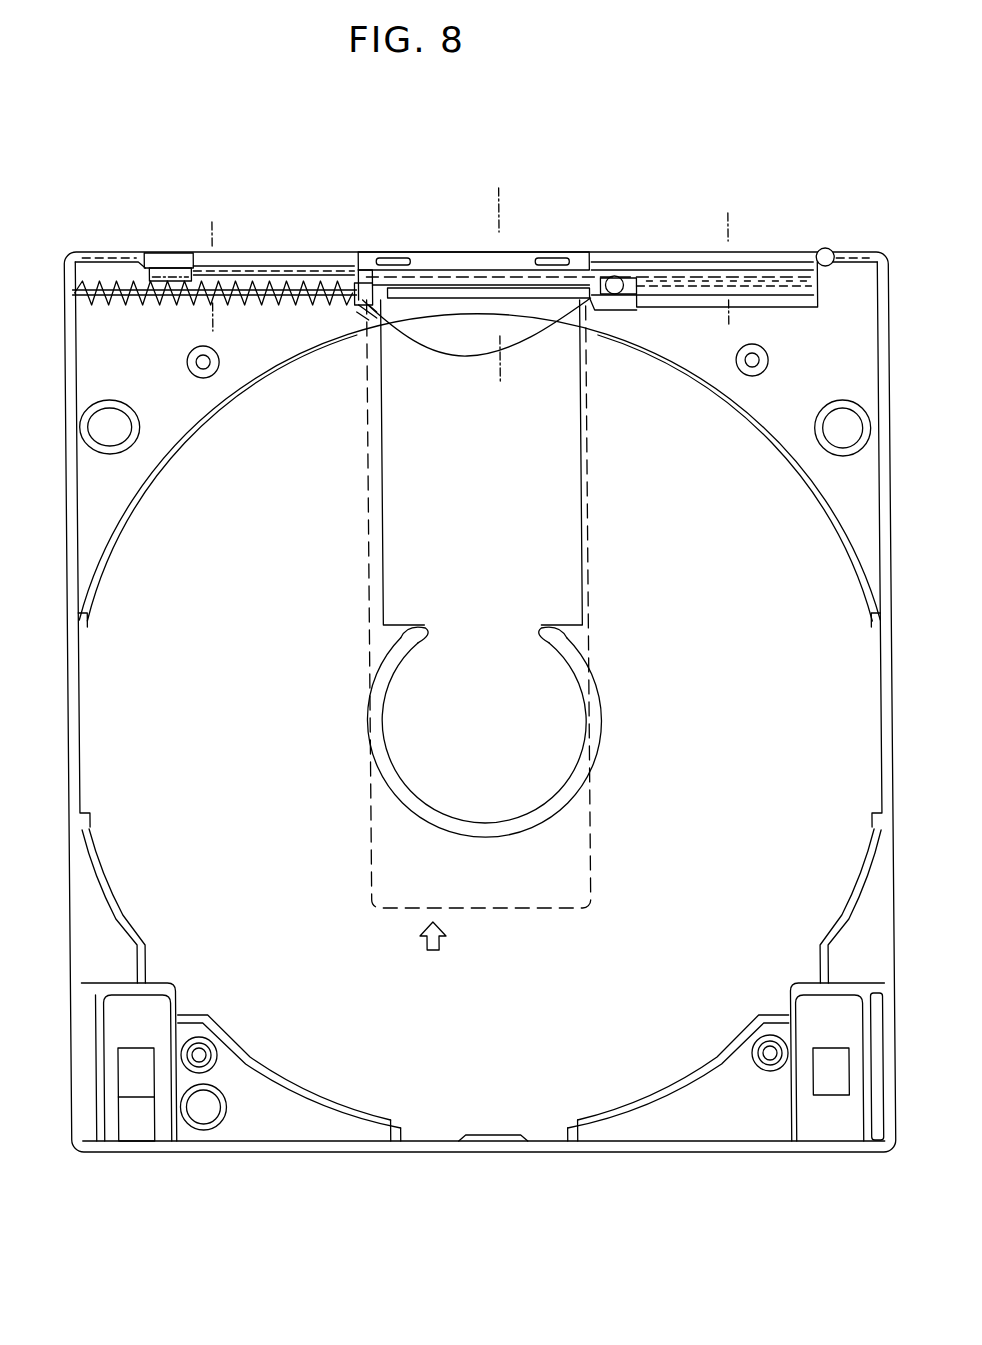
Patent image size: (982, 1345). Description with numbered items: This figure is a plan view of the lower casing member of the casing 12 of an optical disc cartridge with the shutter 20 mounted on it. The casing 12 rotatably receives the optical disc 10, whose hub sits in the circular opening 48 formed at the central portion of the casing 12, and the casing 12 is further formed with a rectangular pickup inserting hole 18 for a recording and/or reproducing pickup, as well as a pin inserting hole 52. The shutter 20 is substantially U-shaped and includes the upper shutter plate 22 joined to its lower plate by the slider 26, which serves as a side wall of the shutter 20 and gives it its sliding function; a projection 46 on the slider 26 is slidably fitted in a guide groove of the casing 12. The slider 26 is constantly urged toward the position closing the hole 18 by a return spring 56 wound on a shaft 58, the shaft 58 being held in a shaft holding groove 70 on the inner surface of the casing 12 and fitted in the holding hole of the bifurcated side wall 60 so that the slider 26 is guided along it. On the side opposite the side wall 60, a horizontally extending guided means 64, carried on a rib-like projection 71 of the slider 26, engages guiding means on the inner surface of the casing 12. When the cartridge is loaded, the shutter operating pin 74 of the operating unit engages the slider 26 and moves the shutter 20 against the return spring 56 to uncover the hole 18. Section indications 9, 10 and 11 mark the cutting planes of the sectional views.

The section line 9- 9 is at (197, 331).
The optical disc 10 is at (712, 326).
The section line 11- 11 is at (483, 380).
The casing 12 is at (70, 551).
The pickup inserting hole 18 is at (584, 492).
The shutter 20 is at (479, 641).
The upper shutter plate 22 is at (541, 330).
The slider 26 is at (175, 253).
The projection for engagement 46 is at (478, 285).
The circular opening 48 is at (582, 772).
The pin inserting hole 52 is at (103, 430).
The return spring 56 is at (250, 284).
The shaft 58 is at (250, 305).
The bifurcated side wall 60 is at (352, 285).
The guided means 64 is at (767, 268).
The shaft holding groove 70 is at (378, 307).
The rib-like projection 71 is at (777, 285).
The shutter operating pin 74 is at (838, 252).